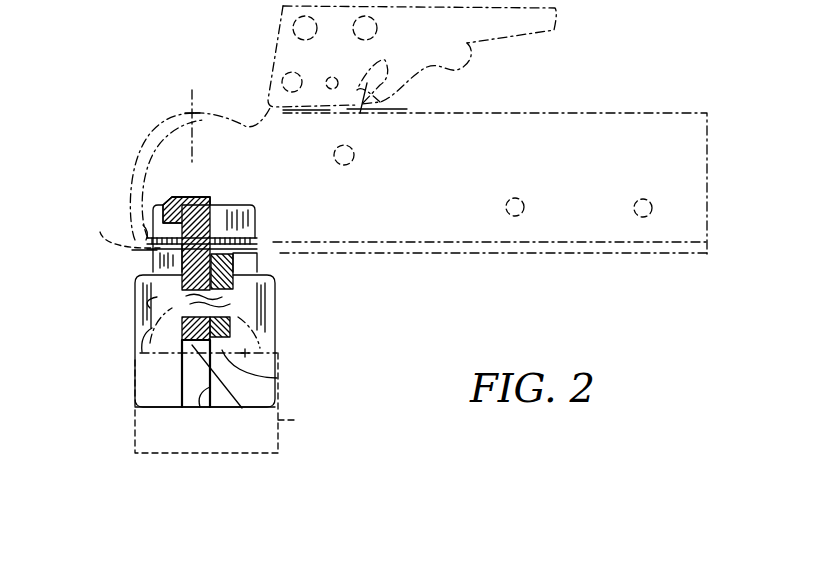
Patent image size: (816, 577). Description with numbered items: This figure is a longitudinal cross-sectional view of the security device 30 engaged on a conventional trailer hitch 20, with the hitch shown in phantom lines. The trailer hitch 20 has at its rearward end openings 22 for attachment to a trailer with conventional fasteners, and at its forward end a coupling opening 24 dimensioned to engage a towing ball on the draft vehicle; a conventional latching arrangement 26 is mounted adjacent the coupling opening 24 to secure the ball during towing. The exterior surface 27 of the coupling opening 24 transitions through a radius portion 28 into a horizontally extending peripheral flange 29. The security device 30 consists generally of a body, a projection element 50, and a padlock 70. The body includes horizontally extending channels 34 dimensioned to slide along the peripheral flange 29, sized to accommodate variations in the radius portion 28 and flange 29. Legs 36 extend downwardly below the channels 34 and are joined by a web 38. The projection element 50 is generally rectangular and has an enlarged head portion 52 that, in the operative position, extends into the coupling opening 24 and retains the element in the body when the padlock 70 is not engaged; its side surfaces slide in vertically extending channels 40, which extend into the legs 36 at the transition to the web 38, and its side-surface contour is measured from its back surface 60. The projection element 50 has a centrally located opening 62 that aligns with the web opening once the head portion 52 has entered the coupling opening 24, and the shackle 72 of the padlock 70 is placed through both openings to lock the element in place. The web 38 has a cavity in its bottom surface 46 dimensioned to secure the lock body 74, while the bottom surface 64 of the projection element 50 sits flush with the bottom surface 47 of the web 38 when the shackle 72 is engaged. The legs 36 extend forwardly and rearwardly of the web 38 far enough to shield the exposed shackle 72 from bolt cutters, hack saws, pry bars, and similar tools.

The trailer hitch 20 is at (138, 117).
The openings 22 is at (635, 201).
The coupling opening 24 is at (227, 121).
The latching arrangement 26 is at (263, 50).
The exterior surface 27 is at (133, 160).
The radius portion 28 is at (137, 233).
The horizontally extending peripheral flange 29 is at (99, 233).
The security device 30 is at (65, 293).
The horizontally extending channels 34 is at (257, 248).
The legs 36 is at (135, 337).
The web 38 is at (257, 265).
The vertically extending channels 40 is at (200, 408).
The bottom surface 46 is at (160, 407).
The bottom surface 47 is at (277, 378).
The projection element 50 is at (172, 282).
The enlarged head portion 52 is at (172, 207).
The back surface 60 is at (213, 222).
The opening 62 is at (182, 293).
The bottom surface 64 is at (229, 393).
The padlock 70 is at (292, 452).
The shackle 72 is at (268, 328).
The lock body 74 is at (298, 420).